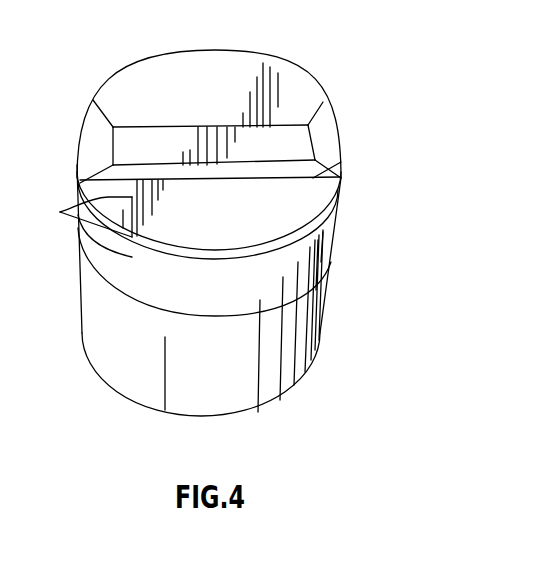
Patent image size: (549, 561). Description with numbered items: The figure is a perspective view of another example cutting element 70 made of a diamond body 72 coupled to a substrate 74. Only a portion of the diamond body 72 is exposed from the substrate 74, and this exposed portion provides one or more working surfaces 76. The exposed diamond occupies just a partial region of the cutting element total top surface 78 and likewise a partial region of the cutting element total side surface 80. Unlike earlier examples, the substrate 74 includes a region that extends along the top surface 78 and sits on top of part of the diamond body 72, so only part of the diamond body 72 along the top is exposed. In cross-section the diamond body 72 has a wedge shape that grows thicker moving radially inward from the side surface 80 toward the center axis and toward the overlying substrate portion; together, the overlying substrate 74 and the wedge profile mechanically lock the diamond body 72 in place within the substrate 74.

The cutting element 70 is at (362, 193).
The diamond body 72 is at (308, 186).
The substrate 74 is at (323, 330).
The working surfaces 76 is at (60, 212).
The cutting element total top surface 78 is at (127, 72).
The cutting element total side surface 80 is at (325, 269).